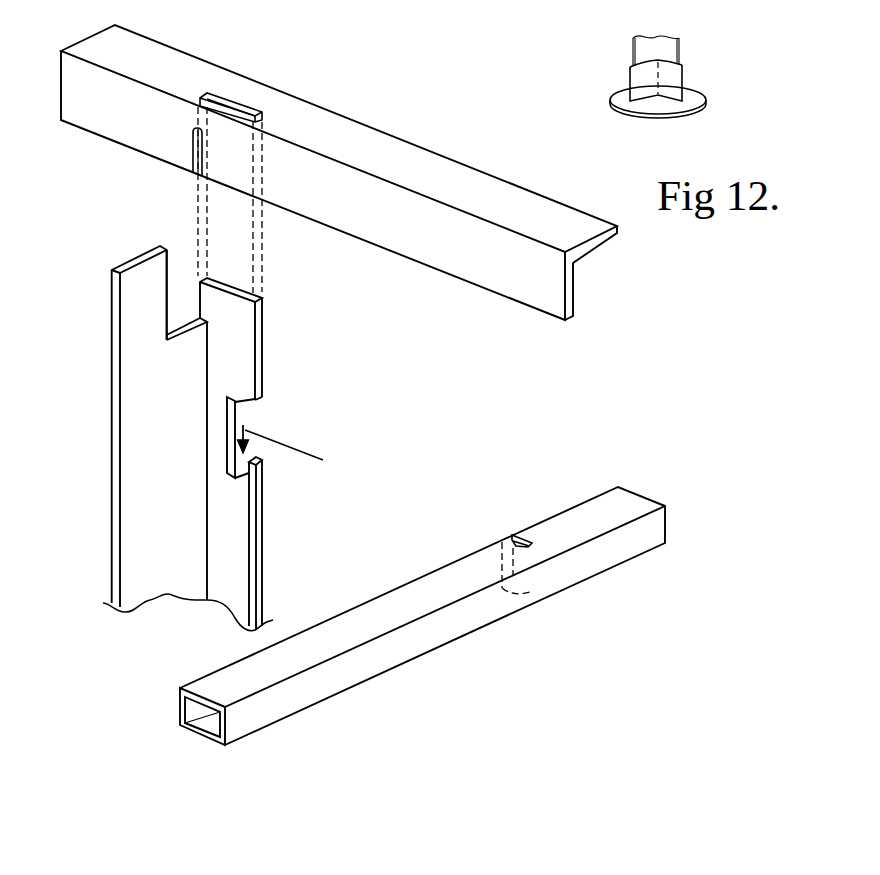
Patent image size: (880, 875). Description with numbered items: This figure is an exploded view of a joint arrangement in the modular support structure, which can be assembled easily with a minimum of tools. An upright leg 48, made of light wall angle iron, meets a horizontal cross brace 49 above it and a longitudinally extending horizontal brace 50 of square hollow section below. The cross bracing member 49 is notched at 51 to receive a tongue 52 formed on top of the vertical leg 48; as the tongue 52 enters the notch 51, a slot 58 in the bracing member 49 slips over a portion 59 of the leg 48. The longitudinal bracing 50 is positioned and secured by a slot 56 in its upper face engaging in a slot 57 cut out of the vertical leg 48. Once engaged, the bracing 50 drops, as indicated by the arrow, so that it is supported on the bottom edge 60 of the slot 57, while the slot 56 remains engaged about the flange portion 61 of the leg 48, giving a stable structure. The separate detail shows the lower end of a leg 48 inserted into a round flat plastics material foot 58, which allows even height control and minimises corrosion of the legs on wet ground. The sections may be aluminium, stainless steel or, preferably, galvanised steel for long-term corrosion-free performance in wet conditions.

The upright leg 48 is at (160, 530).
The horizontal cross brace 49 is at (497, 185).
The longitudinally extending horizontal brace 50 is at (587, 515).
The notch 51 is at (235, 105).
The tongue 52 is at (223, 290).
The slot 56 is at (517, 535).
The slot 57 is at (243, 412).
The slot / foot 58 is at (195, 153).
The portion of the vertical leg 59 is at (197, 340).
The bottom edge of the slot 60 is at (238, 481).
The flange portion 61 is at (215, 423).